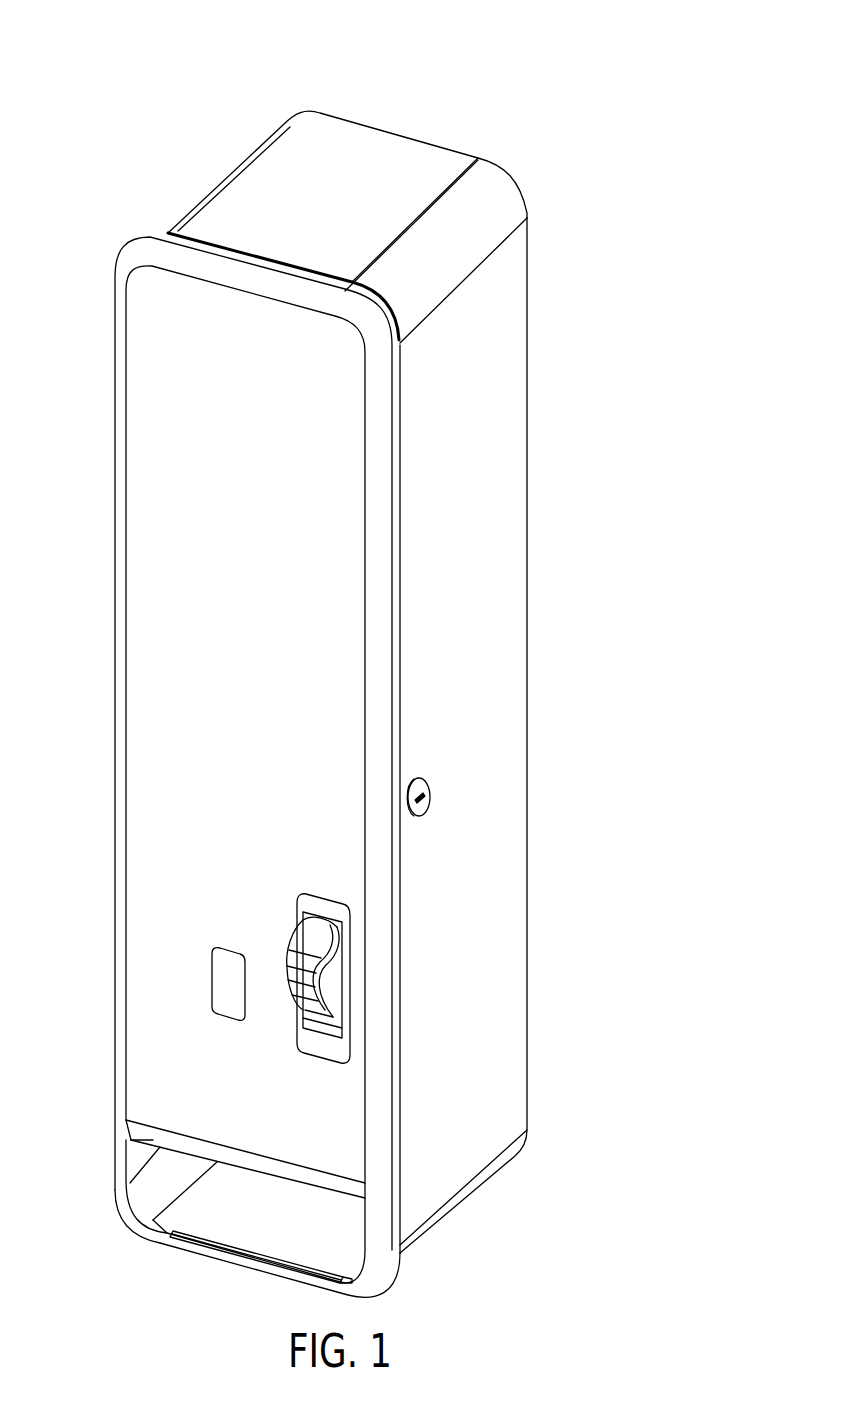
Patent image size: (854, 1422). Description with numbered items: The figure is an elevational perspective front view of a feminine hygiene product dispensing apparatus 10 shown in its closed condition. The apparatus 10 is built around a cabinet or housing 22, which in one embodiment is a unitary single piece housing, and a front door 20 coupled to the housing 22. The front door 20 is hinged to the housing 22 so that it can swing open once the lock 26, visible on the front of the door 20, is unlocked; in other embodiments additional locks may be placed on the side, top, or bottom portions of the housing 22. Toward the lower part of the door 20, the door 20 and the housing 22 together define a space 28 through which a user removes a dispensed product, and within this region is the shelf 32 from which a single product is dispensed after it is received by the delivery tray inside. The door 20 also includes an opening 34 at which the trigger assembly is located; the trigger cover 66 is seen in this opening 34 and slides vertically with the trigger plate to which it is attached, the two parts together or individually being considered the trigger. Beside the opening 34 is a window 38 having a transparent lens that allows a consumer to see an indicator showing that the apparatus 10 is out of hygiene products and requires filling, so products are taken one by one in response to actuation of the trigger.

The feminine hygiene product dispensing apparatus 10 is at (513, 88).
The front door 20 is at (154, 359).
The housing 22 is at (552, 400).
The lock 26 is at (431, 796).
The space 28 is at (177, 1183).
The shelf 32 is at (217, 1218).
The opening 34 is at (318, 903).
The window 38 is at (225, 955).
The trigger cover 66 is at (305, 978).